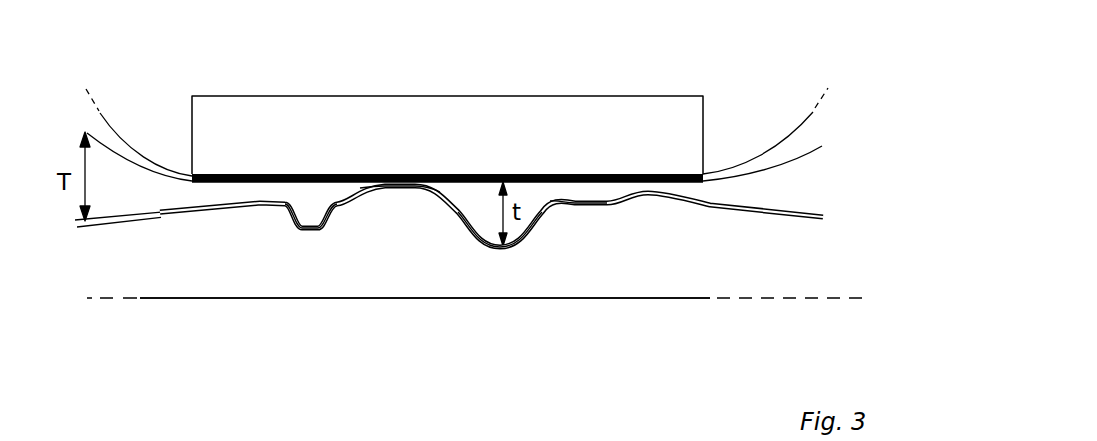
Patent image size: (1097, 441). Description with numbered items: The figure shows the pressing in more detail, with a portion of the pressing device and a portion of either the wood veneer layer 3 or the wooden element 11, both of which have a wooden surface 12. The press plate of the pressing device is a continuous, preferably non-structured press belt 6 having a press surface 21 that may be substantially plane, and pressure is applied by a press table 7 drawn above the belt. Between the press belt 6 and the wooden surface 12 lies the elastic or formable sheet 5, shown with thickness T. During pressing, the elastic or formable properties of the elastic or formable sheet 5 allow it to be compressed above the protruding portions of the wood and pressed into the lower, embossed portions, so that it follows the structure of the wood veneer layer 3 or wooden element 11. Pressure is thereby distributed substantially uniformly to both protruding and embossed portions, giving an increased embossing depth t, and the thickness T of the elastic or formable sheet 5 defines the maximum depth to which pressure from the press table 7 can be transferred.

The wood veneer layer 3 is at (600, 260).
The elastic or formable sheet 5 is at (805, 177).
The press belt 6 is at (773, 153).
The press table 7 is at (567, 113).
The wooden element 11 is at (600, 260).
The wooden surface 12 is at (267, 215).
The press surface 21 is at (453, 175).